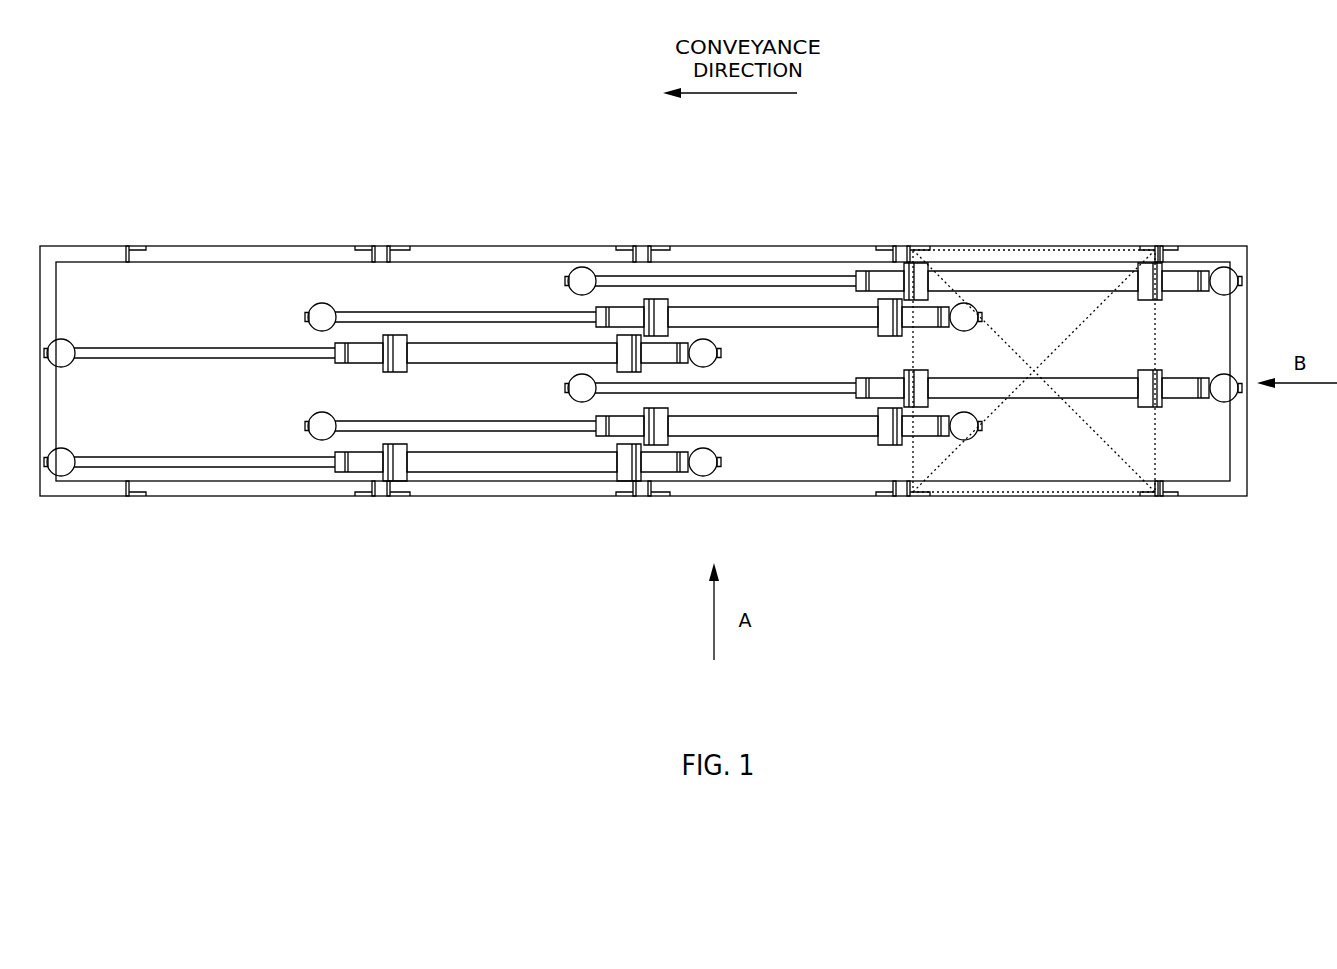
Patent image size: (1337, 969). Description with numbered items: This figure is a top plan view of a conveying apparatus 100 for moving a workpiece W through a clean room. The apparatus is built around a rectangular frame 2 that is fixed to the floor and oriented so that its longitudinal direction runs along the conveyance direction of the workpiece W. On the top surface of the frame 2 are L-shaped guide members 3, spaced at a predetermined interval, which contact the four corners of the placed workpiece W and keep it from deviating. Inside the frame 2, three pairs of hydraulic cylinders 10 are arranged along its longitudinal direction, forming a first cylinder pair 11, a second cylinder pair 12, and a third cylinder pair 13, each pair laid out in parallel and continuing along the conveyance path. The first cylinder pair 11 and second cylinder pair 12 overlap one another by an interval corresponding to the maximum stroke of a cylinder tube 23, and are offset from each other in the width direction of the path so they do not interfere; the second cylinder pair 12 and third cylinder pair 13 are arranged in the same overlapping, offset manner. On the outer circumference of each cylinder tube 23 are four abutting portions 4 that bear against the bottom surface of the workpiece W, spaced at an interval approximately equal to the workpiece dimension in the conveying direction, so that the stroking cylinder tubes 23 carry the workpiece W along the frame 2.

The conveying apparatus 100 is at (1084, 172).
The frame 2 is at (1185, 254).
The first cylinder pair 11 is at (1066, 262).
The L-shaped guide member 3 is at (362, 246).
The abutting portion 4 is at (663, 303).
The hydraulic cylinder 10 is at (457, 462).
The second cylinder pair 12 is at (819, 298).
The third cylinder pair 13 is at (533, 333).
The cylinder tube 23 is at (531, 468).
The workpiece W is at (982, 248).